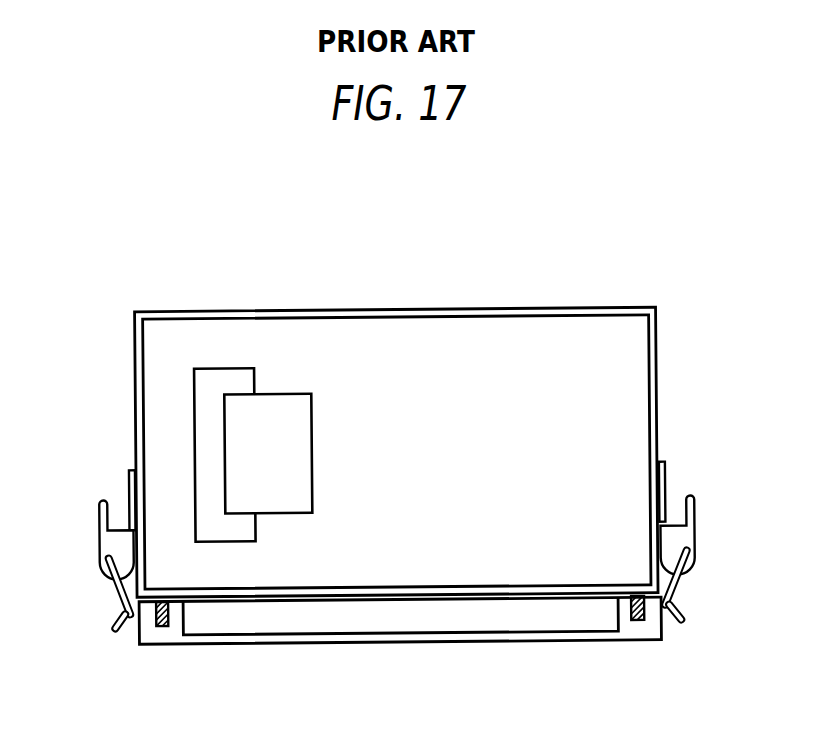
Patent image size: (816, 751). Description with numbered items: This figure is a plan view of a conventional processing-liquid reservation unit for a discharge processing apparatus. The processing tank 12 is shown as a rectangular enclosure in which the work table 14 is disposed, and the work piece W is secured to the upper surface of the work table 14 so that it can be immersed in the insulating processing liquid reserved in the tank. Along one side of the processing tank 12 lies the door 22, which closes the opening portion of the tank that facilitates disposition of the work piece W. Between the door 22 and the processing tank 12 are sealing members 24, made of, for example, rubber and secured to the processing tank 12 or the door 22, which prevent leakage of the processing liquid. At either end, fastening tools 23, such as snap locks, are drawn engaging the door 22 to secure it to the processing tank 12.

The processing tank 12 is at (657, 352).
The work table 14 is at (225, 367).
The work piece W is at (292, 393).
The door 22 is at (575, 642).
The sealing member 24 is at (160, 624).
The fastening tool 23 is at (99, 527).